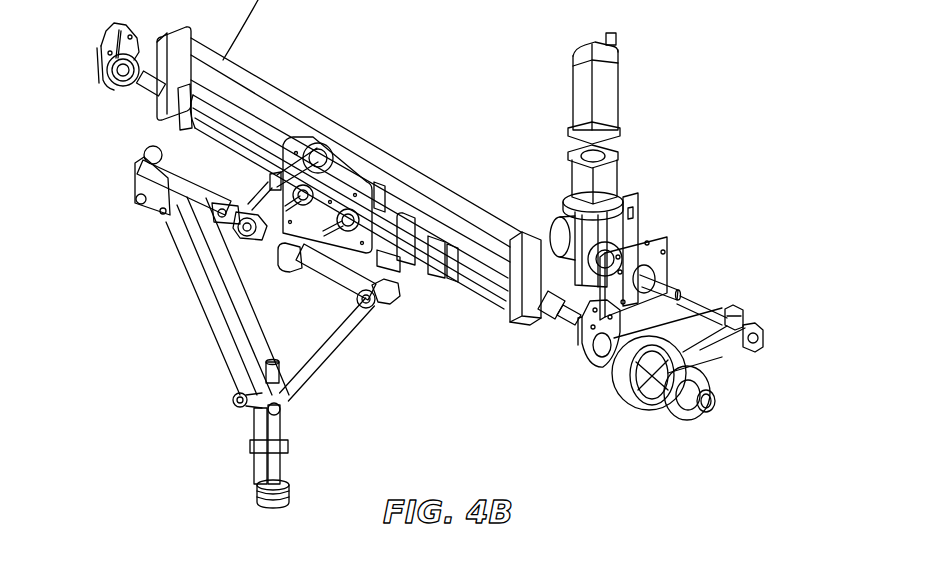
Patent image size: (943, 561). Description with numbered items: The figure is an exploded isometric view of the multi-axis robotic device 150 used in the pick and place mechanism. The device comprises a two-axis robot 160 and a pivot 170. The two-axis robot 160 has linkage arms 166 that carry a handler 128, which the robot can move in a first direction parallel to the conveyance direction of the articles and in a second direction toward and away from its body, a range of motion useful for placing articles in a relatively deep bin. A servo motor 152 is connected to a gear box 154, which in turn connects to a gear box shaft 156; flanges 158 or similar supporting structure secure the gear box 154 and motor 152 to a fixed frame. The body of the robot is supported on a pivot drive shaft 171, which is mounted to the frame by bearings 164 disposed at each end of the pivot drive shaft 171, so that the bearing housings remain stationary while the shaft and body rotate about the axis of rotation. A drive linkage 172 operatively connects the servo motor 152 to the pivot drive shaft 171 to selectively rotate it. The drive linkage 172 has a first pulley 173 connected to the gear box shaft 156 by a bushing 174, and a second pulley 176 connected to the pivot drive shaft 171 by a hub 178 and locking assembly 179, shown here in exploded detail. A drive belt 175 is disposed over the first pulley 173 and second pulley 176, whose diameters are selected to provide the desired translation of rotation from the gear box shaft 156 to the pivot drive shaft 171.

The handler 128 is at (254, 498).
The multi-axis robotic device 150 is at (463, 97).
The servo motor 152 is at (620, 98).
The gear box 154 is at (646, 189).
The gear box shaft 156 is at (688, 292).
The flanges 158 is at (662, 226).
The two-axis robot 160 is at (172, 318).
The bearings 164 is at (96, 79).
The linkage arms 166 is at (222, 356).
The pivot 170 is at (647, 394).
The pivot drive shaft 171 is at (136, 88).
The drive linkage 172 is at (727, 380).
The first pulley 173 is at (751, 320).
The bushing 174 is at (766, 347).
The drive belt 175 is at (729, 357).
The second pulley 176 is at (633, 412).
The hub 178 is at (672, 418).
The locking assembly 179 is at (704, 418).